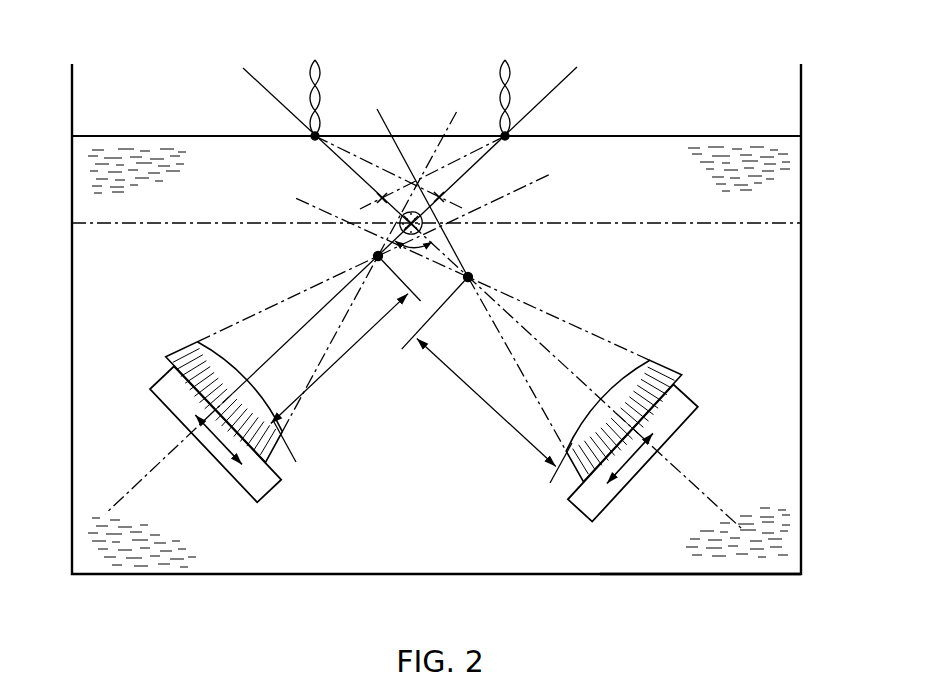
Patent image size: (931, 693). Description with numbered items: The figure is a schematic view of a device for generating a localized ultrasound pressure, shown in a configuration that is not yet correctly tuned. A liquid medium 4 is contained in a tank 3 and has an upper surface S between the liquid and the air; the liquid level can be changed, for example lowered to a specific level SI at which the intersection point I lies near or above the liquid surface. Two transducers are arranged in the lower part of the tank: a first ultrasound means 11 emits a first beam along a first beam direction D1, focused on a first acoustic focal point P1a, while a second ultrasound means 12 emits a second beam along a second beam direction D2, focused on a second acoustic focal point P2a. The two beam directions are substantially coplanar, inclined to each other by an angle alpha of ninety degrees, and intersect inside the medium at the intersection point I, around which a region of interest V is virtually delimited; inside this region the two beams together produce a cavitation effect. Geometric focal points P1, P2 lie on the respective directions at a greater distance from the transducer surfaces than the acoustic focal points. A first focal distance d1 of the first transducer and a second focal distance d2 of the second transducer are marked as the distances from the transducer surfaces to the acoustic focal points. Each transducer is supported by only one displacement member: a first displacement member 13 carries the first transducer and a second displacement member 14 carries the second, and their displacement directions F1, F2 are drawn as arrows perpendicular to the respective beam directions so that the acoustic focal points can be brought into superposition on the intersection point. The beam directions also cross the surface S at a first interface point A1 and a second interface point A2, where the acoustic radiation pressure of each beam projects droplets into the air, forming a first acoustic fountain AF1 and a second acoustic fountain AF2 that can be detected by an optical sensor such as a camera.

The tank 3 is at (252, 575).
The medium 4 is at (722, 576).
The first ultrasound means 11 is at (180, 352).
The second ultrasound means 12 is at (673, 372).
The first displacement member 13 is at (170, 412).
The second displacement member 14 is at (680, 428).
The upper surface S is at (684, 135).
The specific level SI is at (685, 222).
The first acoustic fountain AF1 is at (510, 66).
The second acoustic fountain AF2 is at (320, 66).
The first interface point A1 is at (449, 170).
The second interface point A2 is at (380, 170).
The first beam direction D1 is at (567, 80).
The second beam direction D2 is at (257, 82).
The geometric focal point P1 is at (454, 185).
The geometric focal point P2 is at (385, 185).
The first acoustic focal point P1a is at (376, 256).
The second acoustic focal point P2a is at (470, 277).
The intersection point I is at (400, 217).
The region of interest V is at (422, 227).
The angle alpha is at (413, 260).
The first focal distance d1 is at (339, 378).
The second focal distance d2 is at (494, 411).
The displacement direction F1 is at (215, 453).
The displacement direction F2 is at (638, 472).